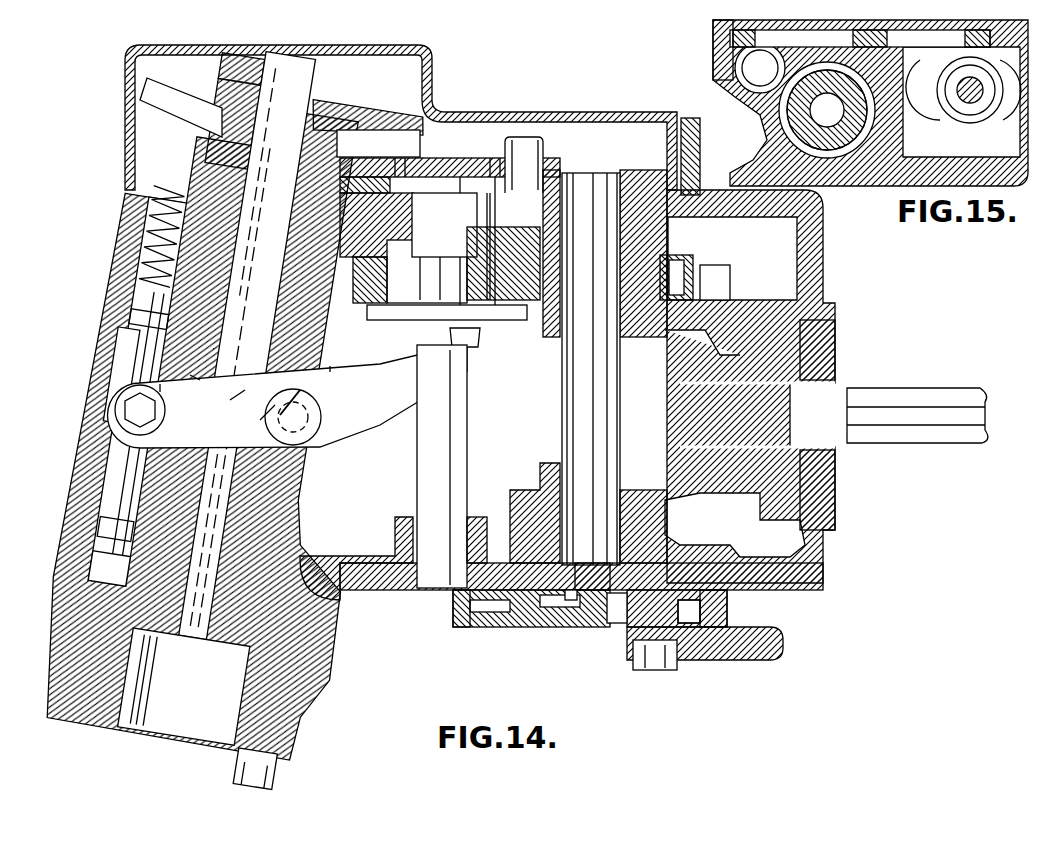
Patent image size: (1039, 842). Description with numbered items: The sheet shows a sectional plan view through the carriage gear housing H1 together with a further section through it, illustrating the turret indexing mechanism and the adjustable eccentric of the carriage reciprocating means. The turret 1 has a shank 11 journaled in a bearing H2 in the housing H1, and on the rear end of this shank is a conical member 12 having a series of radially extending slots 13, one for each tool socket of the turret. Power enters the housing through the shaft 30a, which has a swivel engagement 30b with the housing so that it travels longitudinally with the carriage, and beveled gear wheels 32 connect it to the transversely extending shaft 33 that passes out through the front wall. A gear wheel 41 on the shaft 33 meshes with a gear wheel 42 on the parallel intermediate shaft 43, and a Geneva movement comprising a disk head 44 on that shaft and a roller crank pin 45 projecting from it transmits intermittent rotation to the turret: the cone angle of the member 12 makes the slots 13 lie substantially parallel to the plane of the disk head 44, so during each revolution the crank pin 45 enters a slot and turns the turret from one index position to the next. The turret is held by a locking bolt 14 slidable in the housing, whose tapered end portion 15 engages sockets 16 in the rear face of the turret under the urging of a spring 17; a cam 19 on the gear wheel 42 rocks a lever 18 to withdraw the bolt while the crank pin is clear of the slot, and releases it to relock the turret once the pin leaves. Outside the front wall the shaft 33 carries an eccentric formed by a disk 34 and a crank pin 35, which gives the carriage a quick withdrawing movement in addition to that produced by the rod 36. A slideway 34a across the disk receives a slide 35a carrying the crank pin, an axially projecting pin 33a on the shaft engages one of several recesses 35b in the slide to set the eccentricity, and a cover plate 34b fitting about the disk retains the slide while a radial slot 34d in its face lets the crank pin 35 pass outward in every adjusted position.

In FIG. 14, the turret 1 is at (344, 607).
In FIG. 14, the turret shank 11 is at (172, 306).
In FIG. 15, the turret shank 11 is at (838, 132).
In FIG. 14, the conical member 12 is at (390, 112).
In FIG. 14, the radial slots 13 is at (124, 102).
In FIG. 14, the locking bolt 14 is at (120, 470).
In FIG. 15, the locking bolt 14 is at (716, 80).
In FIG. 14, the tapered end portion 15 is at (105, 400).
In FIG. 14, the sockets 16 is at (100, 572).
In FIG. 14, the spring 17 is at (150, 248).
In FIG. 14, the lever 18 is at (397, 400).
In FIG. 15, the lever 18 is at (922, 107).
In FIG. 14, the cam 19 is at (480, 344).
In FIG. 15, the cam 19 is at (1005, 107).
In FIG. 14, the gear housing H1 is at (822, 262).
In FIG. 14, the bearing H2 is at (318, 352).
In FIG. 14, the shaft 30a is at (924, 398).
In FIG. 14, the swivel engagement 30b is at (822, 362).
In FIG. 14, the beveled gear wheels 32 is at (681, 308).
In FIG. 14, the shaft 33 is at (604, 400).
In FIG. 14, the axially projecting pin 33a is at (590, 600).
In FIG. 14, the disk 34 is at (500, 592).
In FIG. 14, the slideway 34a is at (692, 626).
In FIG. 14, the cover plate 34b is at (460, 627).
In FIG. 14, the radial slot 34d is at (692, 612).
In FIG. 14, the crank pin 35 is at (655, 640).
In FIG. 14, the slide 35a is at (546, 600).
In FIG. 14, the recesses 35b is at (568, 600).
In FIG. 14, the rod 36 is at (776, 630).
In FIG. 14, the gear wheel 41 is at (690, 272).
In FIG. 14, the gear wheel 42 is at (367, 300).
In FIG. 14, the shaft 43 is at (442, 200).
In FIG. 15, the shaft 43 is at (967, 100).
In FIG. 14, the disk head 44 is at (470, 160).
In FIG. 14, the roller crank pin 45 is at (545, 154).